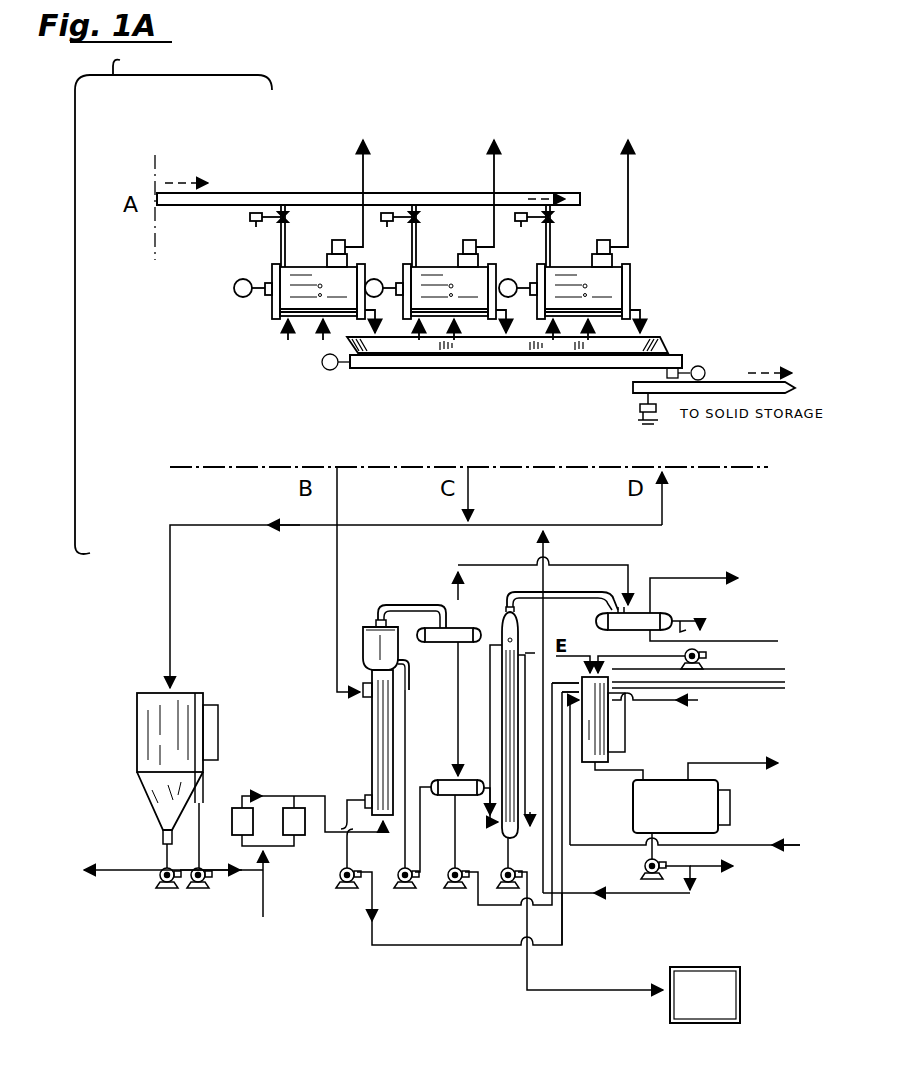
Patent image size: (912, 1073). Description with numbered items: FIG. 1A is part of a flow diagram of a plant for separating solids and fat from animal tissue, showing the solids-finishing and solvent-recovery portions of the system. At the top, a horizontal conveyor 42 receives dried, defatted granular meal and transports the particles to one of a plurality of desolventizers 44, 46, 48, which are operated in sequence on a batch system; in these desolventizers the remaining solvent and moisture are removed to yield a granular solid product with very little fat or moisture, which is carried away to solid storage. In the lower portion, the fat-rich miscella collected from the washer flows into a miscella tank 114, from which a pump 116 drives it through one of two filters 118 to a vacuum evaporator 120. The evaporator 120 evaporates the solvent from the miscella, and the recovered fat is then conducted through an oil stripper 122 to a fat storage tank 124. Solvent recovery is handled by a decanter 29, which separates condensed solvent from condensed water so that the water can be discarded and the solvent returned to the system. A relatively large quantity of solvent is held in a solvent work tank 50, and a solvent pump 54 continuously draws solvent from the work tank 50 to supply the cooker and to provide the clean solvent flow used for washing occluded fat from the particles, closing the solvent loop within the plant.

The horizontal conveyor 42 is at (232, 197).
The desolventizer 44 is at (296, 300).
The desolventizer 46 is at (436, 286).
The desolventizer 48 is at (608, 289).
The miscella tank 114 is at (145, 718).
The pump 116 is at (198, 889).
The filters 118 is at (253, 820).
The vacuum evaporator 120 is at (372, 710).
The oil stripper 122 is at (510, 683).
The decanter 29 is at (600, 728).
The solvent work tank 50 is at (712, 806).
The solvent pump 54 is at (645, 866).
The fat storage tank 124 is at (672, 1015).